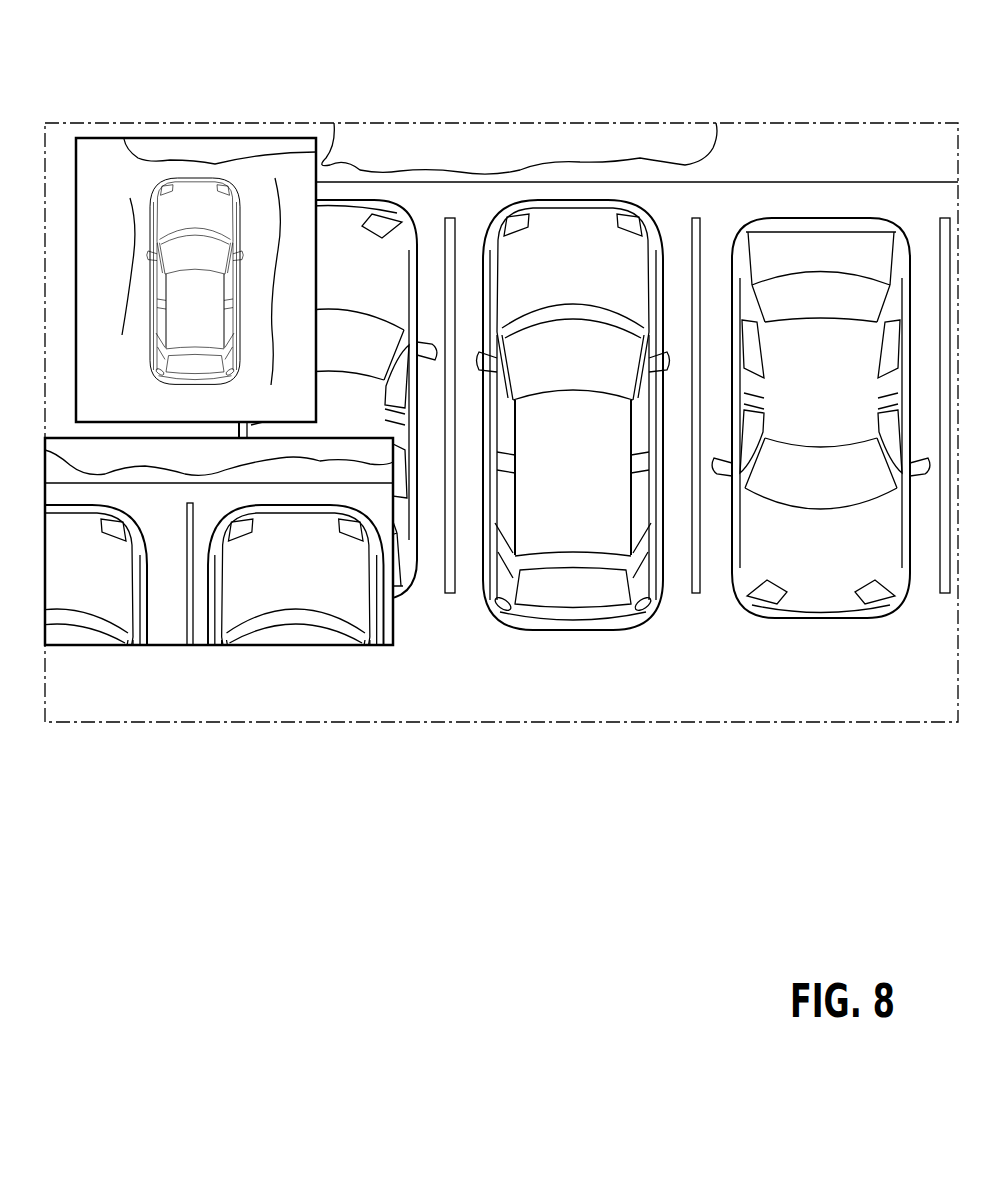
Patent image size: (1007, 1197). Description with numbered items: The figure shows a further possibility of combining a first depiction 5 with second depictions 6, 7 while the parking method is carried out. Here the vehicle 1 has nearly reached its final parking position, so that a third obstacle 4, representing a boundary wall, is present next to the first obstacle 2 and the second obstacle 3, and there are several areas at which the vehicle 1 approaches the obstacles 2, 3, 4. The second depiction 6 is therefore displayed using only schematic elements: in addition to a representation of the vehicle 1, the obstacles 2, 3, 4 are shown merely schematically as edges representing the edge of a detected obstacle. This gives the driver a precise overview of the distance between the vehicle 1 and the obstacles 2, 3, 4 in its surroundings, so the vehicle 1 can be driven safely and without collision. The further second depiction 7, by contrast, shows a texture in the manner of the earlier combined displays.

The vehicle 1 is at (182, 200).
The first obstacle 2 is at (133, 192).
The second obstacle 3 is at (280, 190).
The third obstacle 4 is at (227, 150).
The first depiction 5 is at (880, 124).
The second depiction 6 is at (277, 137).
The further second depiction 7 is at (168, 648).